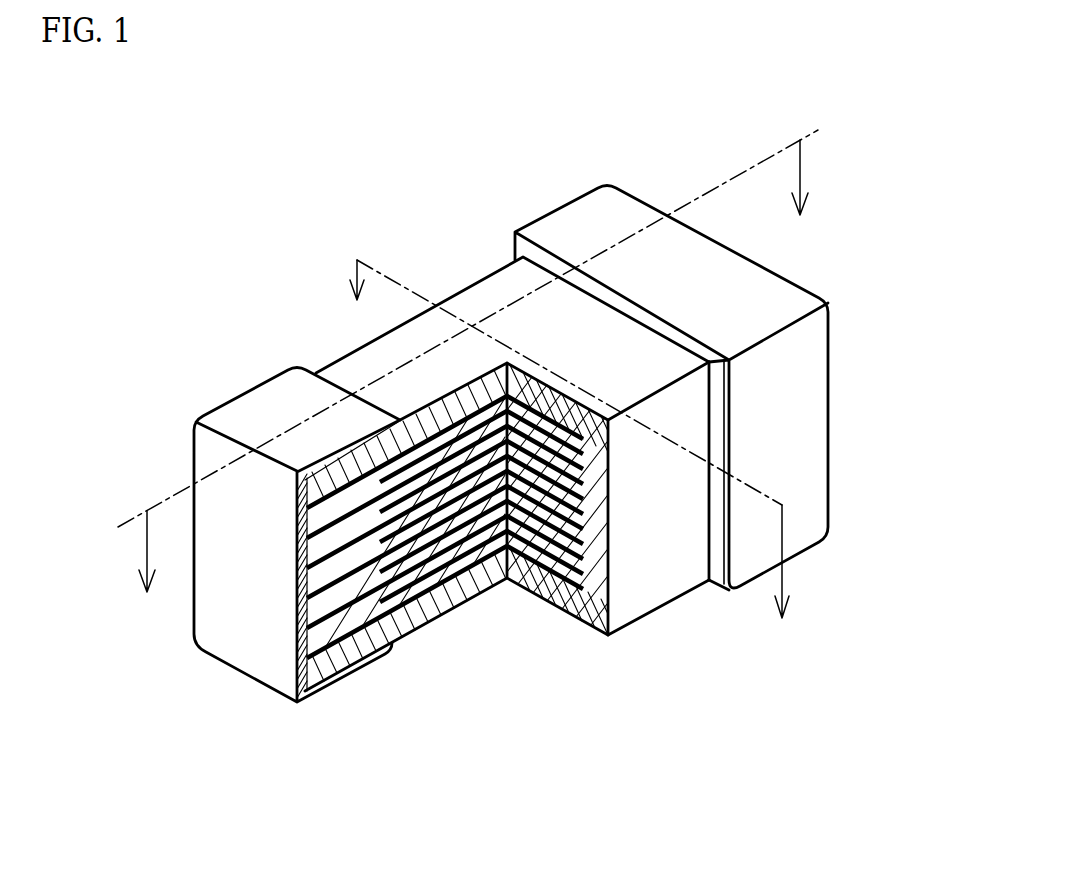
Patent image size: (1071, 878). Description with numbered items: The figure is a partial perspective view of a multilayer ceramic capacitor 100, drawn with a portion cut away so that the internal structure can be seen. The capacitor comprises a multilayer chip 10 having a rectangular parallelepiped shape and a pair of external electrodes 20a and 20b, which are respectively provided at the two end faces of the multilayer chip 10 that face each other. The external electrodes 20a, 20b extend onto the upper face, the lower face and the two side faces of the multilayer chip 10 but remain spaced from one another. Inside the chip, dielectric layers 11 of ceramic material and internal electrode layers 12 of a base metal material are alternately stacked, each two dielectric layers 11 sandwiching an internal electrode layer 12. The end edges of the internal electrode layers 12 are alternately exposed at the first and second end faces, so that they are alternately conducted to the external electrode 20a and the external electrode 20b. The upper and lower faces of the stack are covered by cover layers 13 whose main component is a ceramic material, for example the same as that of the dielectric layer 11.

The multilayer ceramic capacitor 100 is at (932, 113).
The multilayer chip 10 is at (334, 347).
The dielectric layer 11 is at (423, 588).
The internal electrode layer 12 is at (462, 572).
The cover layer 13 is at (477, 302).
The external electrode 20a is at (226, 404).
The external electrode 20b is at (566, 225).